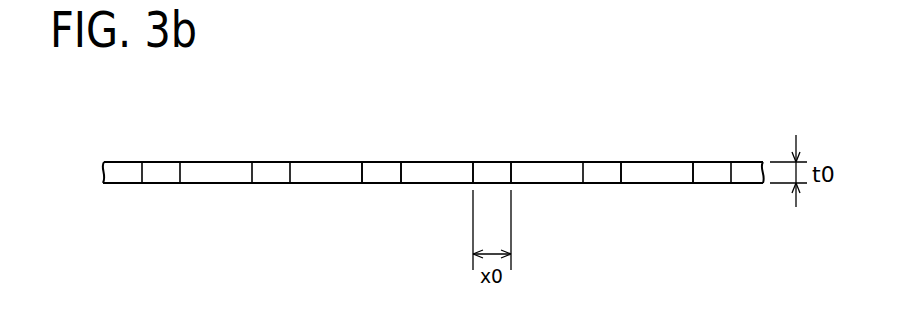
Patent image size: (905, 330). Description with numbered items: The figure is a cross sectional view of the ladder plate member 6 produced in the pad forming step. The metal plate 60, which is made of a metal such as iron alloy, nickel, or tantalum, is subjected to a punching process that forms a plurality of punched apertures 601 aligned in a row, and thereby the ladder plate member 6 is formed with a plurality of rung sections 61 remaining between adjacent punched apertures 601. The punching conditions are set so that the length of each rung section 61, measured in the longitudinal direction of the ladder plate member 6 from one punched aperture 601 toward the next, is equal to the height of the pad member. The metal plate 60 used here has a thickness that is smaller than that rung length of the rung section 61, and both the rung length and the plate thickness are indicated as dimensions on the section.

The ladder plate member 6 is at (707, 157).
The metal plate 60 is at (662, 162).
The rung section 61 is at (380, 176).
The punched aperture 601 is at (402, 176).